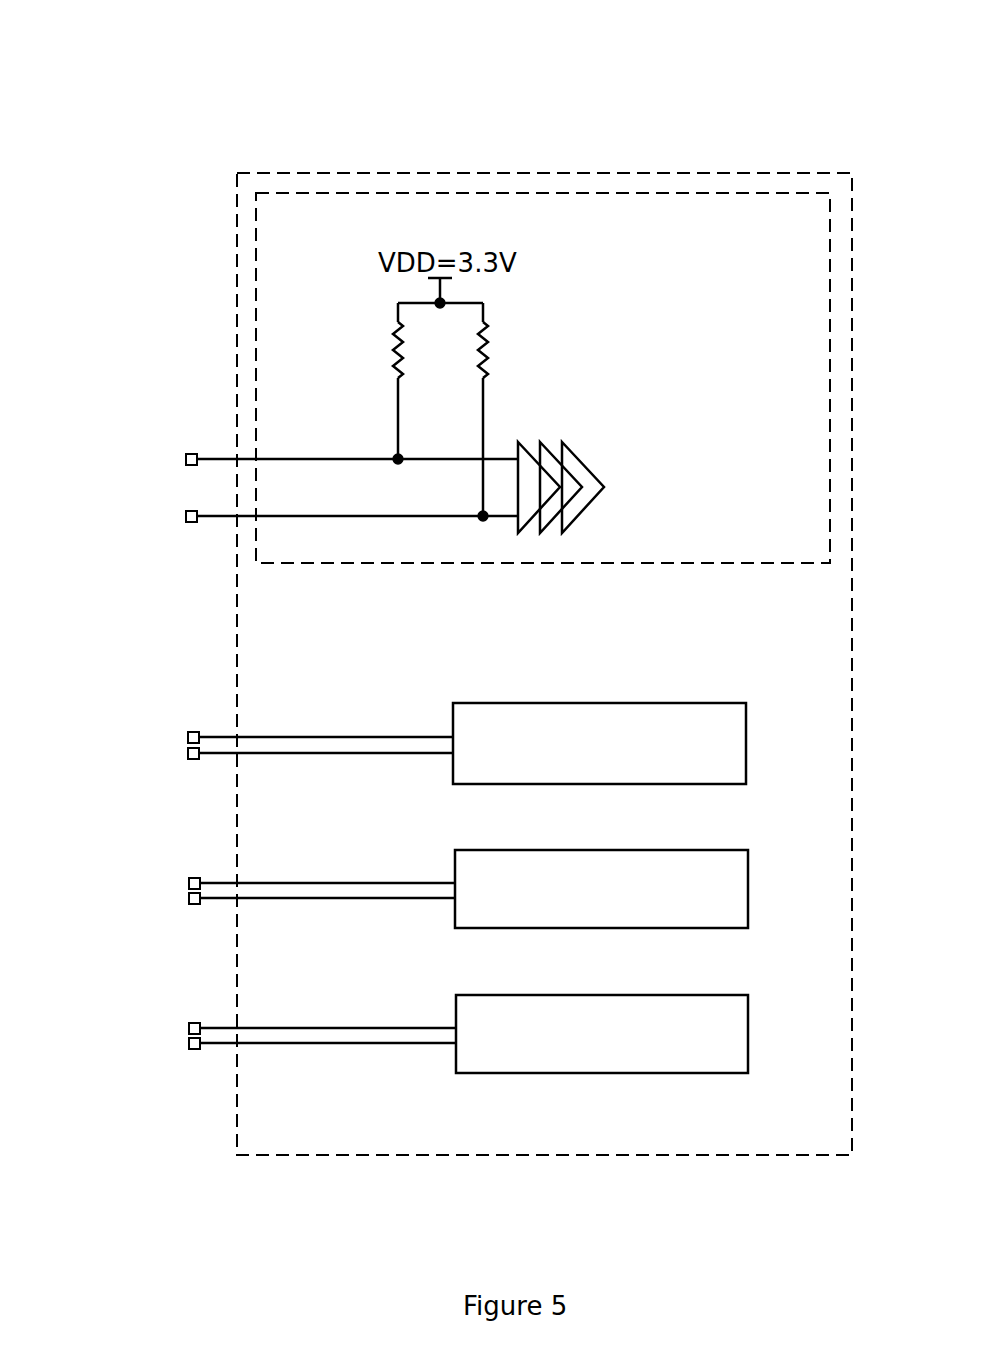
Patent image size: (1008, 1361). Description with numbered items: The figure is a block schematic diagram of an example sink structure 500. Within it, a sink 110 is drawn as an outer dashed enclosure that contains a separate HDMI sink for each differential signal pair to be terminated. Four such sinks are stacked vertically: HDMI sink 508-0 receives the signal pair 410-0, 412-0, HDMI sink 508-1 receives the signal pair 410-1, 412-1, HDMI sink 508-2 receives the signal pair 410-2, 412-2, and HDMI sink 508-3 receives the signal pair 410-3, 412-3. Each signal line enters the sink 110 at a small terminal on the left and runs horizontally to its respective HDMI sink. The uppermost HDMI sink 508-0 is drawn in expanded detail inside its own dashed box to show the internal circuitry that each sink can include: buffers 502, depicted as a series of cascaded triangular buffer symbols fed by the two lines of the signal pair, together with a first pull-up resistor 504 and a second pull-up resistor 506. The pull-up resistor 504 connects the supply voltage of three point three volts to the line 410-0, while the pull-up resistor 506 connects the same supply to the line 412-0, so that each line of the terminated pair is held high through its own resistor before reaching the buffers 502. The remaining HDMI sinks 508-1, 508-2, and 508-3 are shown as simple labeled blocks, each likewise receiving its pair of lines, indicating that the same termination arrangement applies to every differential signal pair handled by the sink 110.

The sink structure 500 is at (185, 29).
The sink 110 is at (613, 173).
The pull-up resistor R504 504 is at (363, 383).
The pull-up resistor R506 506 is at (520, 412).
The buffers 502 is at (604, 440).
The signal pair line 410-0 is at (313, 461).
The signal pair line 412-0 is at (313, 518).
The signal pair line 410-1 is at (190, 734).
The signal pair line 412-1 is at (190, 756).
The signal pair line 410-2 is at (191, 880).
The signal pair line 412-2 is at (191, 902).
The signal pair line 410-3 is at (191, 1025).
The signal pair line 412-3 is at (191, 1047).
The HDMI sink 508-0 is at (785, 531).
The HDMI sink 508-1 is at (637, 771).
The HDMI sink 508-2 is at (637, 918).
The HDMI sink 508-3 is at (638, 1063).